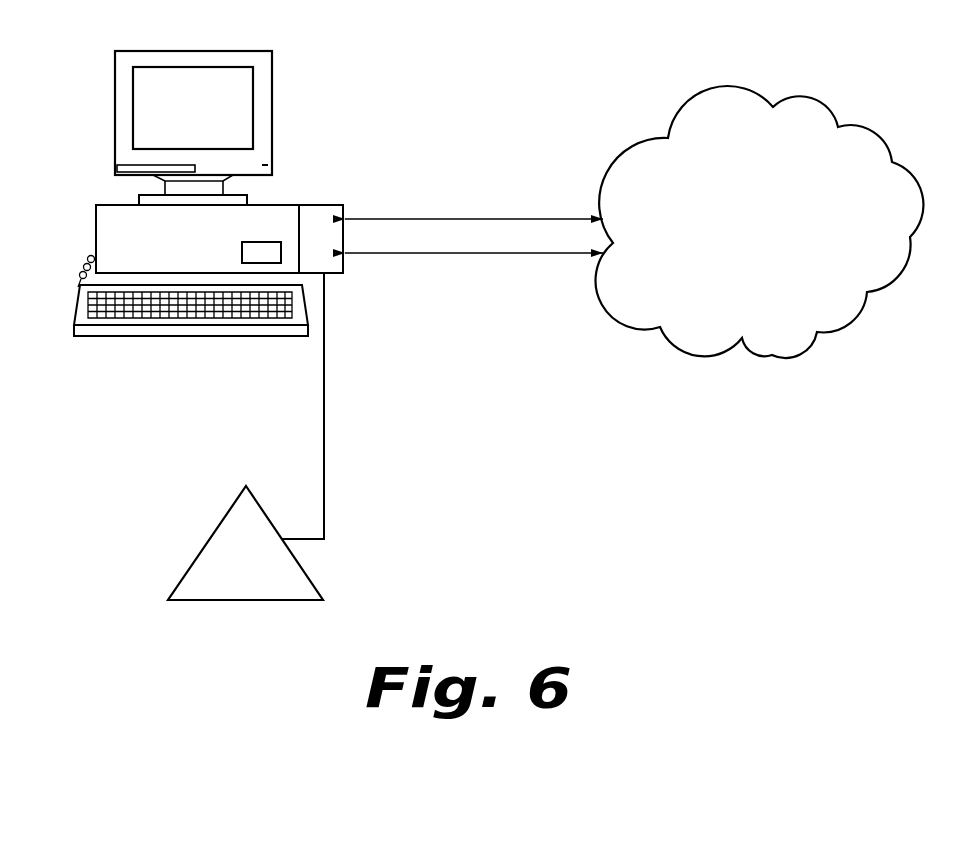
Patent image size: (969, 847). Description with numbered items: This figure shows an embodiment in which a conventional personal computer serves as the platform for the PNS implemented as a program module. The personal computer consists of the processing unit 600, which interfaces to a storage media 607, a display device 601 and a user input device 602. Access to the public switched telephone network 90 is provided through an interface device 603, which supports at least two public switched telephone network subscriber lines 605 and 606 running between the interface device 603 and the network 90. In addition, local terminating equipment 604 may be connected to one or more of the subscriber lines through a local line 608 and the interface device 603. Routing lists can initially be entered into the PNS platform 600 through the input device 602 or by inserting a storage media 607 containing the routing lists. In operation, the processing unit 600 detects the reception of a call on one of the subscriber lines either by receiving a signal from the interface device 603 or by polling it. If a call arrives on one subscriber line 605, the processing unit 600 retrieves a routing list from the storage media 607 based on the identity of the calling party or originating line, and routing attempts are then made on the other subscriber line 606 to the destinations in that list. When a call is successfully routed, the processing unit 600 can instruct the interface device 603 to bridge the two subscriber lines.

The public switched telephone network 90 is at (788, 115).
The processing unit 600 is at (95, 238).
The display device 601 is at (147, 123).
The user input device 602 is at (80, 310).
The interface device 603 is at (328, 213).
The local terminating equipment 604 is at (207, 547).
The public switched telephone network subscriber line 605 is at (503, 218).
The public switched telephone network subscriber line 606 is at (495, 254).
The storage media 607 is at (243, 253).
The local line 608 is at (325, 440).